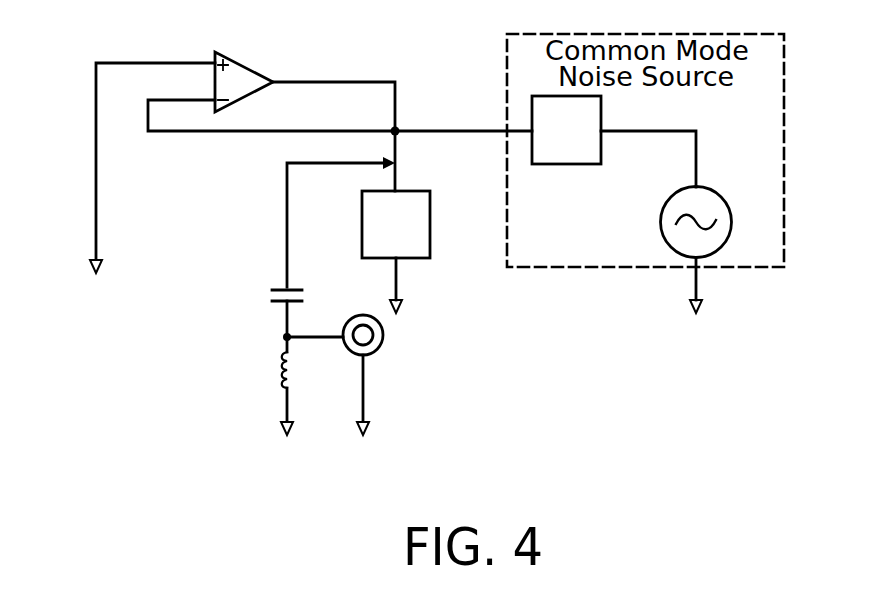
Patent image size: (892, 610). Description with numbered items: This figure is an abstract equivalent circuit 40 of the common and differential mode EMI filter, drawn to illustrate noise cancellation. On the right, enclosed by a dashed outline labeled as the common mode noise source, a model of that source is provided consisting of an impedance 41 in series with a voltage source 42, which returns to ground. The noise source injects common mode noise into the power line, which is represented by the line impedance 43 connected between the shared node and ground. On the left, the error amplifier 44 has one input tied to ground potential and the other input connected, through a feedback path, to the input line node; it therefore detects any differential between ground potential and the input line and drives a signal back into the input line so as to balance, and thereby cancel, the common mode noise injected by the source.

The equivalent circuit 40 is at (204, 342).
The impedance 41 is at (567, 164).
The voltage source 42 is at (731, 222).
The power line impedance 43 is at (430, 245).
The amplifier 44 is at (226, 52).